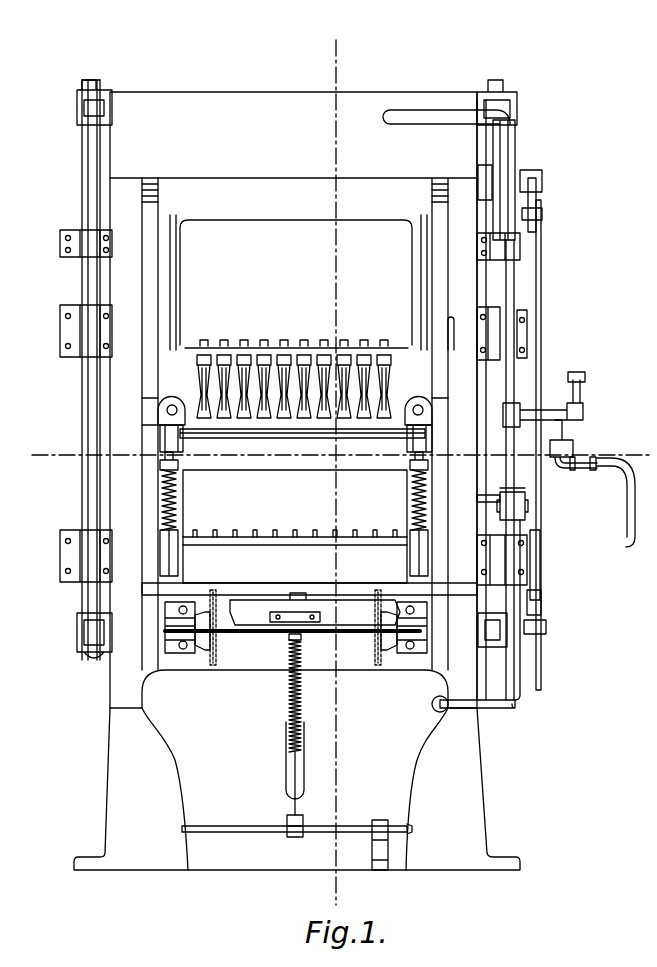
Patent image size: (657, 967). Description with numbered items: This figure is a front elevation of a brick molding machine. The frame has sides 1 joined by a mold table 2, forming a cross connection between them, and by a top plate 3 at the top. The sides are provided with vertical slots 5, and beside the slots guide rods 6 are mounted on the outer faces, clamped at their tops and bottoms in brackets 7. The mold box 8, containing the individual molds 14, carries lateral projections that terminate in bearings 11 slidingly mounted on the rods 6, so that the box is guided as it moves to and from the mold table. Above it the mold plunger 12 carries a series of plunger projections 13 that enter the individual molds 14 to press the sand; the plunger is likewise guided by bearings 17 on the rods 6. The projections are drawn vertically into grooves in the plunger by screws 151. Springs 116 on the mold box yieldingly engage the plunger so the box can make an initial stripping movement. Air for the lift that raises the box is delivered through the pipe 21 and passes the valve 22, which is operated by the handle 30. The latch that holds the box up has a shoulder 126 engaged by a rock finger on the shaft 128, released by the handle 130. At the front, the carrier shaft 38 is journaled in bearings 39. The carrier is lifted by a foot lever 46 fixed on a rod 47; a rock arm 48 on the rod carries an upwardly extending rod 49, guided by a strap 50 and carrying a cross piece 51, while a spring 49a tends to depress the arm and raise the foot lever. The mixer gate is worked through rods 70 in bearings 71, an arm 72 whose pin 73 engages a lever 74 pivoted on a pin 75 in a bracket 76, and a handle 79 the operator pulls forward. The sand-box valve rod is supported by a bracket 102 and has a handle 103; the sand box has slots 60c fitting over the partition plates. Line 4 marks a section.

The sides of the frame 1 is at (113, 742).
The mold table 2 is at (262, 658).
The top plate 3 is at (382, 103).
The section line 4 is at (335, 468).
The vertical slots 5 is at (60, 455).
The guide rods 6 is at (84, 397).
The brackets 7 is at (77, 112).
The mold box 8 is at (260, 546).
The bearings 11 is at (62, 560).
The mold plunger 12 is at (250, 349).
The plunger projections 13 is at (288, 362).
The individual molds 14 is at (258, 543).
The bearings 17 is at (70, 232).
The pipe 21 is at (520, 150).
The valve 22 is at (530, 502).
The operating handle 30 is at (538, 476).
The shaft 38 is at (330, 630).
The bearings 39 is at (170, 650).
The foot lever 46 is at (385, 866).
The rod 47 is at (356, 826).
The rock arm 48 is at (303, 822).
The rod 49 is at (302, 735).
The spring 49a is at (287, 728).
The strap 50 is at (300, 610).
The cross piece 51 is at (350, 605).
The slots 60c is at (323, 533).
The rods 70 is at (546, 180).
The bearings 71 is at (480, 176).
The arm 72 is at (540, 204).
The pin 73 is at (545, 222).
The lever 74 is at (542, 295).
The pin 75 is at (565, 378).
The bracket 76 is at (530, 366).
The handle 79 is at (543, 542).
The bracket 102 is at (548, 628).
The handle 103 is at (543, 606).
The springs 116 is at (178, 493).
The shoulder 126 is at (172, 402).
The shaft 128 is at (238, 441).
The handle 130 is at (452, 325).
The screws 151 is at (232, 346).